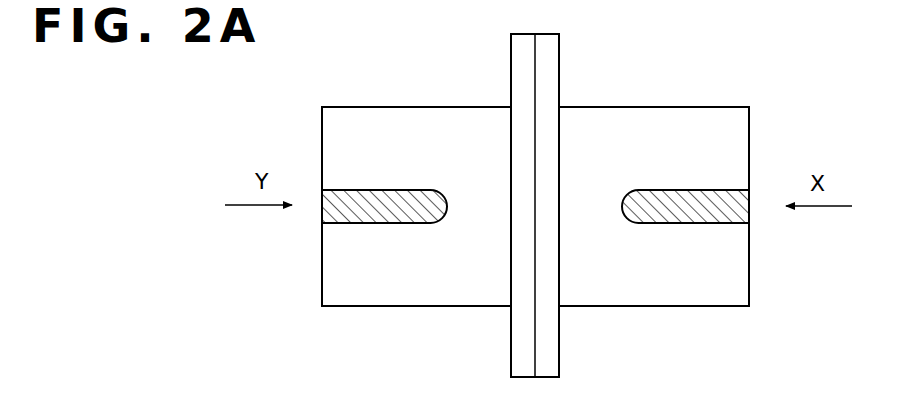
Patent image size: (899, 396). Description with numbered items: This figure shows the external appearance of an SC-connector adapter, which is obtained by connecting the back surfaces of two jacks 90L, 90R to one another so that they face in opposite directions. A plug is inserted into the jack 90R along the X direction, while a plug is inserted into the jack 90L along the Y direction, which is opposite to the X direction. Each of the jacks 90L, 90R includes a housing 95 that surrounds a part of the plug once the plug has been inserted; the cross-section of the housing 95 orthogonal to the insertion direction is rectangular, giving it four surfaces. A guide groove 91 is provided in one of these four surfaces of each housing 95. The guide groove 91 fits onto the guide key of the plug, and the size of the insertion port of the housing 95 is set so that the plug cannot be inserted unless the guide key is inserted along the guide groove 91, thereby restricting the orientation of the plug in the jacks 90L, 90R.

The jack 90L is at (389, 87).
The jack 90R is at (642, 91).
The housing 95 is at (320, 132).
The guide groove 91 is at (418, 189).